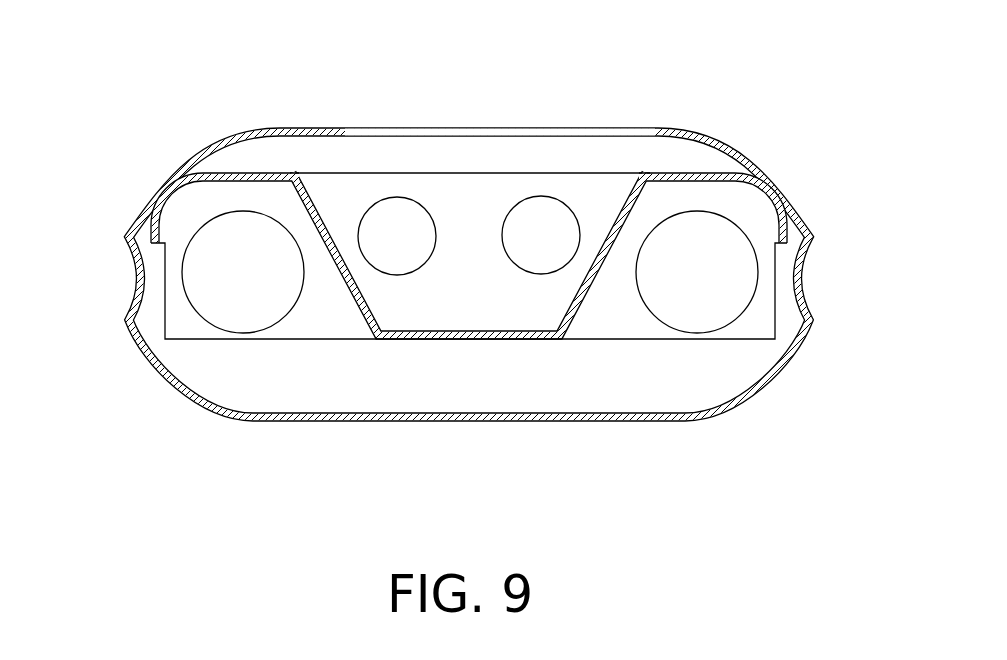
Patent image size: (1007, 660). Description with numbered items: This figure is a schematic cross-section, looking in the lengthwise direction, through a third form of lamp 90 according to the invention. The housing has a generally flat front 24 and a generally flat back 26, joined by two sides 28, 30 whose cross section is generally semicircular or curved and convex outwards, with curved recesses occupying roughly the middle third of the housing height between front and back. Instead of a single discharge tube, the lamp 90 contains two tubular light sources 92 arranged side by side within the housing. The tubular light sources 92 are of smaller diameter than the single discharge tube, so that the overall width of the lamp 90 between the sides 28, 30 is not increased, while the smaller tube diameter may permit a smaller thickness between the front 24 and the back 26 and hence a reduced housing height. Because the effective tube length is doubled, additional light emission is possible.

The front 24 is at (238, 128).
The back 26 is at (620, 421).
The side 28 is at (783, 178).
The side 30 is at (148, 203).
The lamp 90 is at (464, 263).
The tubular light source 92 is at (398, 230).